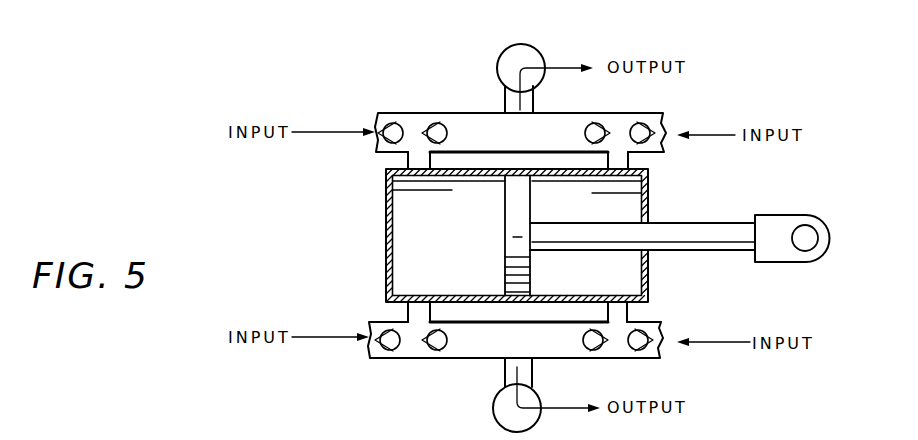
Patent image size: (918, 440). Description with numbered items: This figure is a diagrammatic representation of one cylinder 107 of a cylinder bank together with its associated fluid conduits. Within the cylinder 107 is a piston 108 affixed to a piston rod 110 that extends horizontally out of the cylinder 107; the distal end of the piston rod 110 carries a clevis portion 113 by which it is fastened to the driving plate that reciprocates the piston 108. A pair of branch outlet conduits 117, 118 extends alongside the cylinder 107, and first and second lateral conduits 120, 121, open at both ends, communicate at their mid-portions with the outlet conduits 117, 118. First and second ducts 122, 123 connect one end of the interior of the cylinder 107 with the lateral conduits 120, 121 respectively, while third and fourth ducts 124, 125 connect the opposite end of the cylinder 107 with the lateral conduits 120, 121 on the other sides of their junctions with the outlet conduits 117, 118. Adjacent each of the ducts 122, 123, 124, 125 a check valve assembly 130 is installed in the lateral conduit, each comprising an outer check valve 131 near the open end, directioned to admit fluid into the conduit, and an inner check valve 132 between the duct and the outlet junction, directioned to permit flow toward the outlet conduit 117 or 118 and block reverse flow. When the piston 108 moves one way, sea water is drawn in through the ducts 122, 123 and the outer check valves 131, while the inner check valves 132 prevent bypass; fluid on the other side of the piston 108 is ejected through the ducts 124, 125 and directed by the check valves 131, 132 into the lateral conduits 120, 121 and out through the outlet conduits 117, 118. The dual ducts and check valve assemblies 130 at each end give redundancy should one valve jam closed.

The cylinder 107 is at (386, 237).
The piston 108 is at (518, 218).
The piston rod 110 is at (722, 232).
The clevis portion 113 is at (777, 228).
The outlet conduit 117 is at (503, 407).
The outlet conduit 118 is at (508, 52).
The first lateral conduit 120 is at (548, 360).
The second lateral conduit 121 is at (483, 118).
The first duct 122 is at (407, 313).
The second duct 123 is at (403, 157).
The third duct 124 is at (627, 313).
The fourth duct 125 is at (628, 160).
The check valve assembly 130 is at (402, 376).
The outer check valve 131 is at (392, 336).
The inner check valve 132 is at (440, 345).